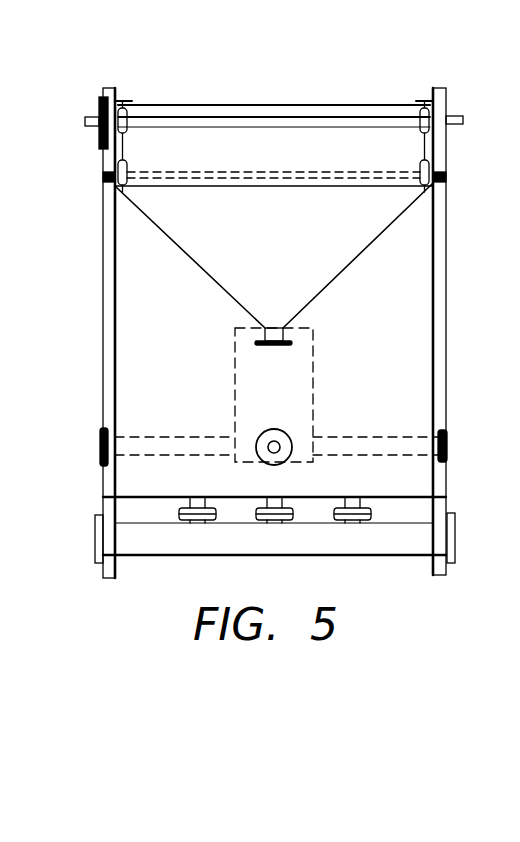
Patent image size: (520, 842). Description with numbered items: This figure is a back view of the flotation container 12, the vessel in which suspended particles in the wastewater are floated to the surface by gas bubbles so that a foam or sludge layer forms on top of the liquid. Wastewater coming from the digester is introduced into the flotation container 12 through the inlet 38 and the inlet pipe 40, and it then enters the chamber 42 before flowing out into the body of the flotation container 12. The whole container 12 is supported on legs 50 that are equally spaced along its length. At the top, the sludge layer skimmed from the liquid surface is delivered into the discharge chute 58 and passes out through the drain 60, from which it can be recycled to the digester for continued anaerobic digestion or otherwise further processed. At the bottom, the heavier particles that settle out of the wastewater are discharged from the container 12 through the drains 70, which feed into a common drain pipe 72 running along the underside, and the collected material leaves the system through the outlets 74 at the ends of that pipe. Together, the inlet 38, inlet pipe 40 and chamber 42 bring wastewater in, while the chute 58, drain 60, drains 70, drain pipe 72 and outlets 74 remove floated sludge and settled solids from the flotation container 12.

The flotation container 12 is at (176, 61).
The inlet 38 is at (100, 446).
The inlet pipe 40 is at (176, 440).
The chamber 42 is at (287, 396).
The legs 50 is at (447, 350).
The discharge chute 58 is at (334, 229).
The drain 60 is at (255, 343).
The drains 70 is at (258, 522).
The drain pipe 72 is at (340, 538).
The outlets 74 is at (95, 535).